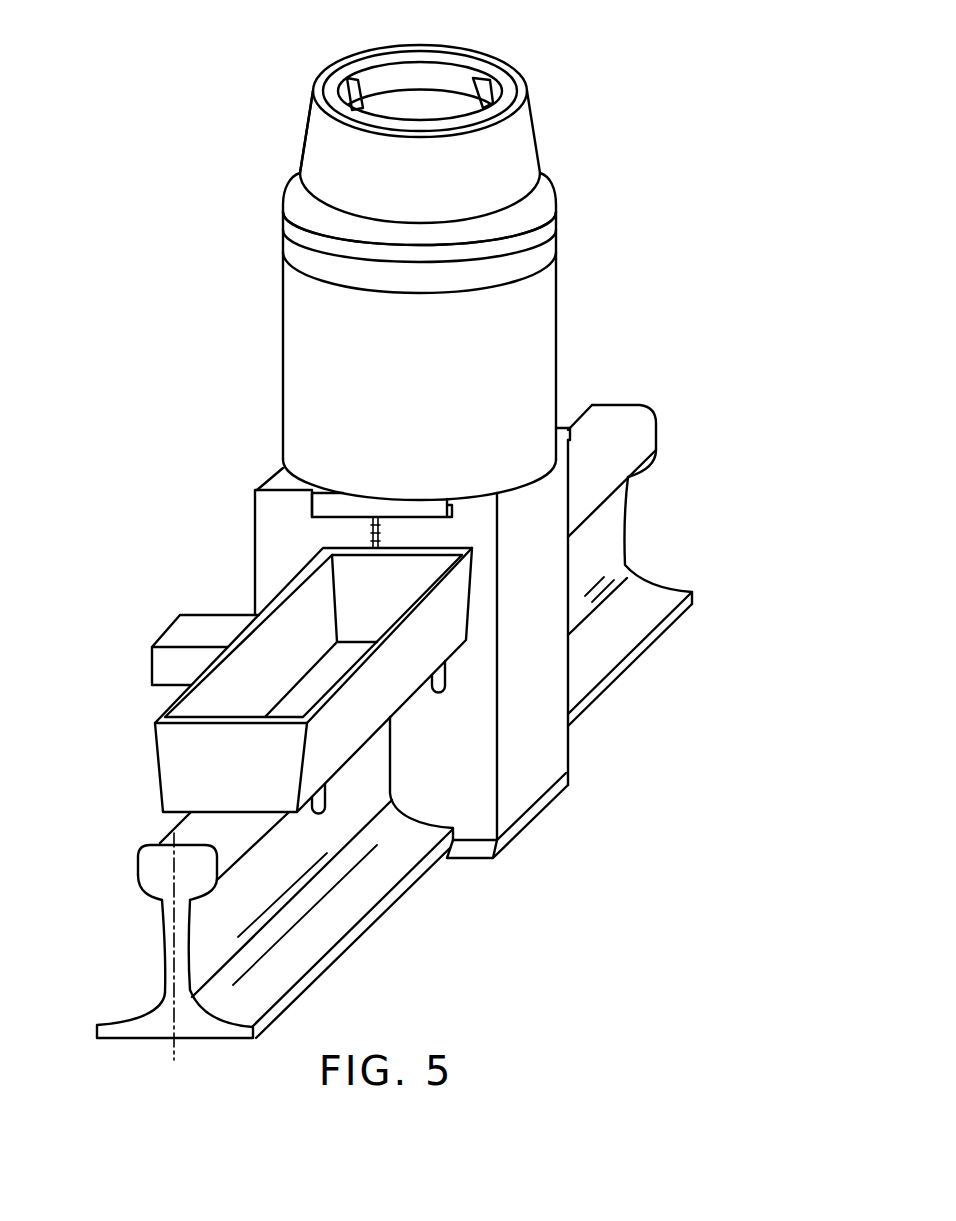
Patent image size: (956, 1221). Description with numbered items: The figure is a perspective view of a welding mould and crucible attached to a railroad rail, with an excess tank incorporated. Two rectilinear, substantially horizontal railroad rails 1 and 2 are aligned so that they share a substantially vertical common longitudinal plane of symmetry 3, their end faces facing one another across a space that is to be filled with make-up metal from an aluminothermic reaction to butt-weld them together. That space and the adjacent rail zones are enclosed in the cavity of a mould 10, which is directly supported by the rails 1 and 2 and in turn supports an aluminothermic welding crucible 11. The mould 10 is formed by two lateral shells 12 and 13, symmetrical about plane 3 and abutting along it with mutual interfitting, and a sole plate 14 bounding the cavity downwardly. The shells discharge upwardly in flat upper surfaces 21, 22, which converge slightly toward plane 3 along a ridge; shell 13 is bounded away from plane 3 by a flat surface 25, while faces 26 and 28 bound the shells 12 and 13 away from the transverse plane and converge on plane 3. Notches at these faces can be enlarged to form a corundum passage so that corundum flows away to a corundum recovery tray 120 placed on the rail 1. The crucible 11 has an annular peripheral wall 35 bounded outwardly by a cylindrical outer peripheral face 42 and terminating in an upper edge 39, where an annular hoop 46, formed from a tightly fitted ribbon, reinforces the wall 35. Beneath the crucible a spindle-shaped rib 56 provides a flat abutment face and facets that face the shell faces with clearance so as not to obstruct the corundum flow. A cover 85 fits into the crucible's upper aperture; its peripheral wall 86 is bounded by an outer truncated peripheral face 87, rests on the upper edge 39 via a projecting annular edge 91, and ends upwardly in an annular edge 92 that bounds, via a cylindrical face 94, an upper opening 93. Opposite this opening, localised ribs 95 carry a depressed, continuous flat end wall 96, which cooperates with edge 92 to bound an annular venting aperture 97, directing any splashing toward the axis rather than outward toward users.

The railroad rail 1 is at (388, 939).
The railroad rail 2 is at (652, 677).
The common longitudinal plane of symmetry 3 is at (170, 931).
The mould 10 is at (598, 750).
The aluminothermic welding crucible 11 is at (572, 268).
The lateral shell 12 is at (255, 552).
The lateral shell 13 is at (555, 765).
The sole plate 14 is at (507, 847).
The flat upper surface 21 is at (268, 482).
The flat upper surface 22 is at (567, 427).
The flat surface 25 is at (553, 563).
The face 26 is at (262, 588).
The face 28 is at (472, 822).
The peripheral wall 35 is at (297, 393).
The upper edge 39 is at (557, 208).
The cylindrical outer peripheral face 42 is at (285, 323).
The annular hoop 46 is at (298, 258).
The spindle-shaped rib 56 is at (310, 509).
The cover 85 is at (558, 132).
The peripheral wall 86 is at (300, 173).
The outer truncated peripheral face 87 is at (310, 121).
The annular edge 91 is at (281, 216).
The annular edge 92 is at (321, 83).
The upper opening 93 is at (443, 77).
The cylindrical face 94 is at (363, 68).
The localised rib 95 is at (474, 58).
The flat end wall 96 is at (397, 107).
The annular venting aperture 97 is at (413, 75).
The corundum recovery tray 120 is at (173, 782).